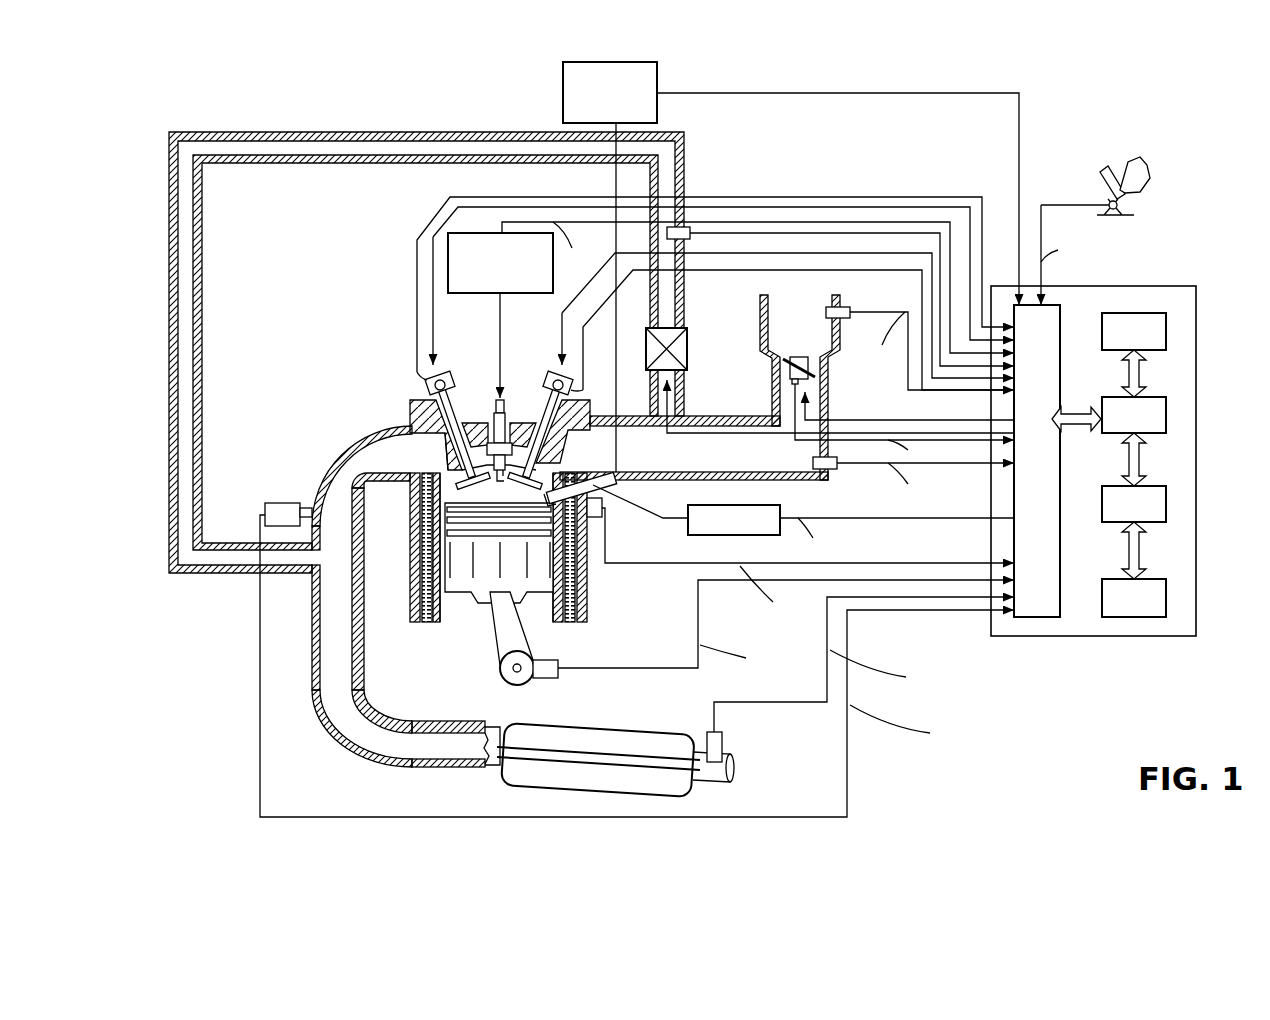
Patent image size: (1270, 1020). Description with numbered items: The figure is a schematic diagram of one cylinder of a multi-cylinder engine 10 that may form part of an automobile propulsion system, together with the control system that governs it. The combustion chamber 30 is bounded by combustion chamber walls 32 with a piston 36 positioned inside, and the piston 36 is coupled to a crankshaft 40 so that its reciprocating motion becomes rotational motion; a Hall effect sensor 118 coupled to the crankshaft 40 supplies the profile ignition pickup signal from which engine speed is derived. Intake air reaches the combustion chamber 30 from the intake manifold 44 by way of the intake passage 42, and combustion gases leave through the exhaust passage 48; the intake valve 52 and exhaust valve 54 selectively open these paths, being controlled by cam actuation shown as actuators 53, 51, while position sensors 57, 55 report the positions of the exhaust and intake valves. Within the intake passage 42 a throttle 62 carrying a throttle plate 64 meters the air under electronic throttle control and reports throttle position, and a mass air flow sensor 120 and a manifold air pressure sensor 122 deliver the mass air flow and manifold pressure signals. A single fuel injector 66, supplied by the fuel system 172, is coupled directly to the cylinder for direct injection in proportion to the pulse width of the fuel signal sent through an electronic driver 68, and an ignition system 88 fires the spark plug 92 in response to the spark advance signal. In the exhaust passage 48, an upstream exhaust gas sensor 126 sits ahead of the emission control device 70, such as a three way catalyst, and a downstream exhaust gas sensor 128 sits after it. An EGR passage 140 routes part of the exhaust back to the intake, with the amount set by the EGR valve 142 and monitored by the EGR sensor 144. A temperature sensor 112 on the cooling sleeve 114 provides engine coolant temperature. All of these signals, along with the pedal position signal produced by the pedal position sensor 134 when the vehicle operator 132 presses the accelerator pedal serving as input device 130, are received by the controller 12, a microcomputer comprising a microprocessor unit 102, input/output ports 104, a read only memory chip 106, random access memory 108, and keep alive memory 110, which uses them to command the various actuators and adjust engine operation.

The engine 10 is at (348, 356).
The controller 12 is at (1196, 288).
The combustion chamber 30 is at (497, 487).
The combustion chamber walls 32 is at (446, 612).
The piston 36 is at (483, 582).
The crankshaft 40 is at (508, 682).
The intake passage 42 is at (809, 335).
The intake manifold 44 is at (752, 460).
The exhaust passage 48 is at (390, 466).
The intake cam actuator 51 is at (549, 372).
The intake valve 52 is at (540, 458).
The exhaust cam actuator 53 is at (446, 372).
The exhaust valve 54 is at (423, 430).
The position sensor 55 is at (566, 390).
The position sensor 57 is at (426, 378).
The throttle 62 is at (808, 362).
The throttle plate 64 is at (782, 362).
The fuel injector 66 is at (596, 488).
The electronic driver 68 is at (700, 535).
The emission control device 70 is at (658, 732).
The ignition system 88 is at (460, 236).
The spark plug 92 is at (502, 400).
The microprocessor unit 102 is at (1166, 415).
The input/output ports 104 is at (1062, 312).
The read only memory chip 106 is at (1166, 330).
The random access memory 108 is at (1166, 508).
The keep alive memory 110 is at (1166, 600).
The temperature sensor 112 is at (603, 516).
The cooling sleeve 114 is at (570, 578).
The Hall effect sensor 118 is at (548, 679).
The mass air flow sensor 120 is at (850, 307).
The manifold air pressure sensor 122 is at (830, 470).
The upstream exhaust gas sensor 126 is at (263, 505).
The downstream exhaust gas sensor 128 is at (722, 740).
The input device 130 is at (1100, 176).
The vehicle operator 132 is at (1148, 170).
The pedal position sensor 134 is at (1135, 211).
The EGR passage 140 is at (424, 133).
The EGR valve 142 is at (687, 350).
The EGR sensor 144 is at (686, 240).
The fuel system 172 is at (632, 62).